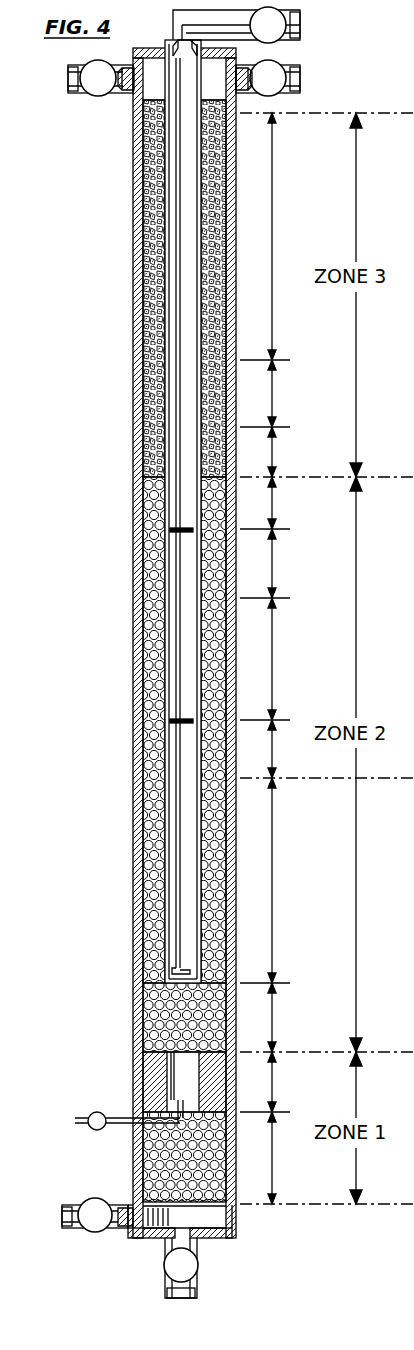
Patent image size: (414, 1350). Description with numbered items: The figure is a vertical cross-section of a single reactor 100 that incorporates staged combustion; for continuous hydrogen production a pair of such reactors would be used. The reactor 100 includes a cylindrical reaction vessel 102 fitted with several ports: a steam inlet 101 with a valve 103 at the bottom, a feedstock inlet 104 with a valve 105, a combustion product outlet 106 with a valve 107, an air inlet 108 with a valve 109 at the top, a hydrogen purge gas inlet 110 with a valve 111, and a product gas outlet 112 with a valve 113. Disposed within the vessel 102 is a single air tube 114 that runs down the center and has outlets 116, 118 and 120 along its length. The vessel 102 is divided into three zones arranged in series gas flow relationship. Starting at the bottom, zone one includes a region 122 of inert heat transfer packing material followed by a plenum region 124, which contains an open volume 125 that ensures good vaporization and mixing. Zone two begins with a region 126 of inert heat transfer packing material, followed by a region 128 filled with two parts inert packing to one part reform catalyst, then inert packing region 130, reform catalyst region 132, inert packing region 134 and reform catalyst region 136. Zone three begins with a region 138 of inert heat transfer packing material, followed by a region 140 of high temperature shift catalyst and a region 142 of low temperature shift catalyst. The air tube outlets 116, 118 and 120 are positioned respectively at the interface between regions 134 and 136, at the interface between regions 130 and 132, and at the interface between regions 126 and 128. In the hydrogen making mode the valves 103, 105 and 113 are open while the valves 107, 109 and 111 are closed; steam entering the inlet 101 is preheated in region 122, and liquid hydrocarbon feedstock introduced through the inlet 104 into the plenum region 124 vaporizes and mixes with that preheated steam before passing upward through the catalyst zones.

The reactor 100 is at (128, 276).
The steam inlet 101 is at (200, 1239).
The cylindrical reaction vessel 102 is at (235, 284).
The valve 103 is at (196, 1278).
The feedstock inlet 104 is at (143, 1143).
The valve 105 is at (103, 1130).
The combustion product outlet 106 is at (124, 1233).
The valve 107 is at (90, 1236).
The air inlet 108 is at (176, 47).
The valve 109 is at (283, 38).
The hydrogen purge gas inlet 110 is at (241, 97).
The valve 111 is at (283, 63).
The product gas outlet 112 is at (131, 93).
The valve 113 is at (93, 95).
The air tube 114 is at (205, 236).
The air tube outlet 116 is at (181, 527).
The air tube outlet 118 is at (181, 718).
The air tube outlet 120 is at (160, 962).
The region of inert heat transfer packing material 122 is at (277, 1163).
The plenum region 124 is at (277, 1083).
The open volume 125 is at (165, 1075).
The region of inert heat transfer packing material 126 is at (277, 1017).
The region of mixed packing and reform catalyst 128 is at (277, 885).
The inert packing region 130 is at (277, 747).
The reform catalyst region 132 is at (277, 660).
The inert packing region 134 is at (277, 565).
The reform catalyst region 136 is at (277, 503).
The region of inert heat transfer packing material 138 is at (277, 450).
The region of high temperature shift catalyst 140 is at (277, 395).
The region of low temperature shift catalyst 142 is at (277, 240).